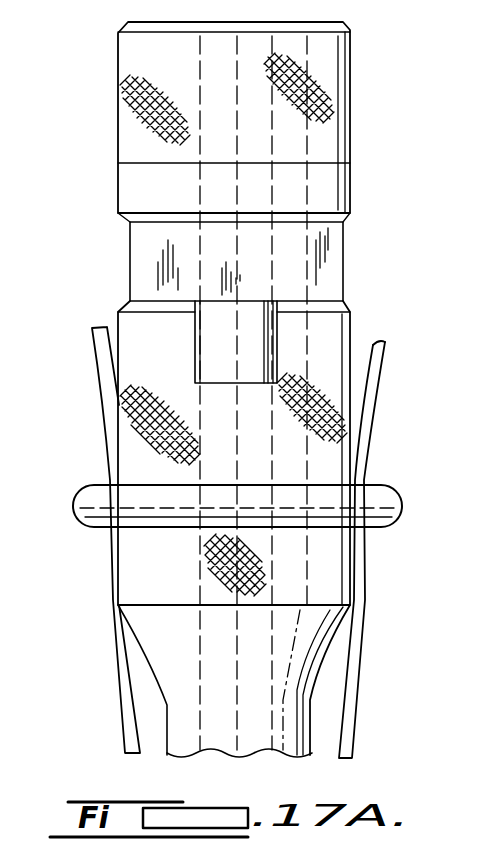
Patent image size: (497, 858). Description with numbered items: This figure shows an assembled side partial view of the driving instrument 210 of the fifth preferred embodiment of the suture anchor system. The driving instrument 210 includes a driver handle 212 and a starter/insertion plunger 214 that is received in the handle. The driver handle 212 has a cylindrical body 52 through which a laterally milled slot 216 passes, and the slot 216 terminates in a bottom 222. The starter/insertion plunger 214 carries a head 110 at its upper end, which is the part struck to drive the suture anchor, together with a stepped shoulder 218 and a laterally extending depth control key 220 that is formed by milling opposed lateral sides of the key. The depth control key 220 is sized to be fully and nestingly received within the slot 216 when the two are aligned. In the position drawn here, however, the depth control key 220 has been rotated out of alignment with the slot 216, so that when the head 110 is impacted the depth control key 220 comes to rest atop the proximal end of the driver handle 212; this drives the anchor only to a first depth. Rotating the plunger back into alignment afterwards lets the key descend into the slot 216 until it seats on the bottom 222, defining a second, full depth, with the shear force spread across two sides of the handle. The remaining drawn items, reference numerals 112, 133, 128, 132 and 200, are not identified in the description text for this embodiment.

The driving instrument 210 is at (78, 95).
The starter/insertion plunger 214 is at (350, 72).
The head 110 is at (333, 118).
The suture 112 is at (220, 322).
The laterally milled slot 216 is at (205, 343).
The bottom of the slot 222 is at (220, 383).
The stepped shoulder 218 is at (305, 230).
The depth control key 220 is at (327, 273).
The arm tip 133 is at (405, 327).
The driver handle 212 is at (356, 437).
The retaining ring 128 is at (392, 487).
The flexible arm 132 is at (362, 586).
The sheath 200 is at (327, 656).
The cylindrical body 52 is at (312, 753).